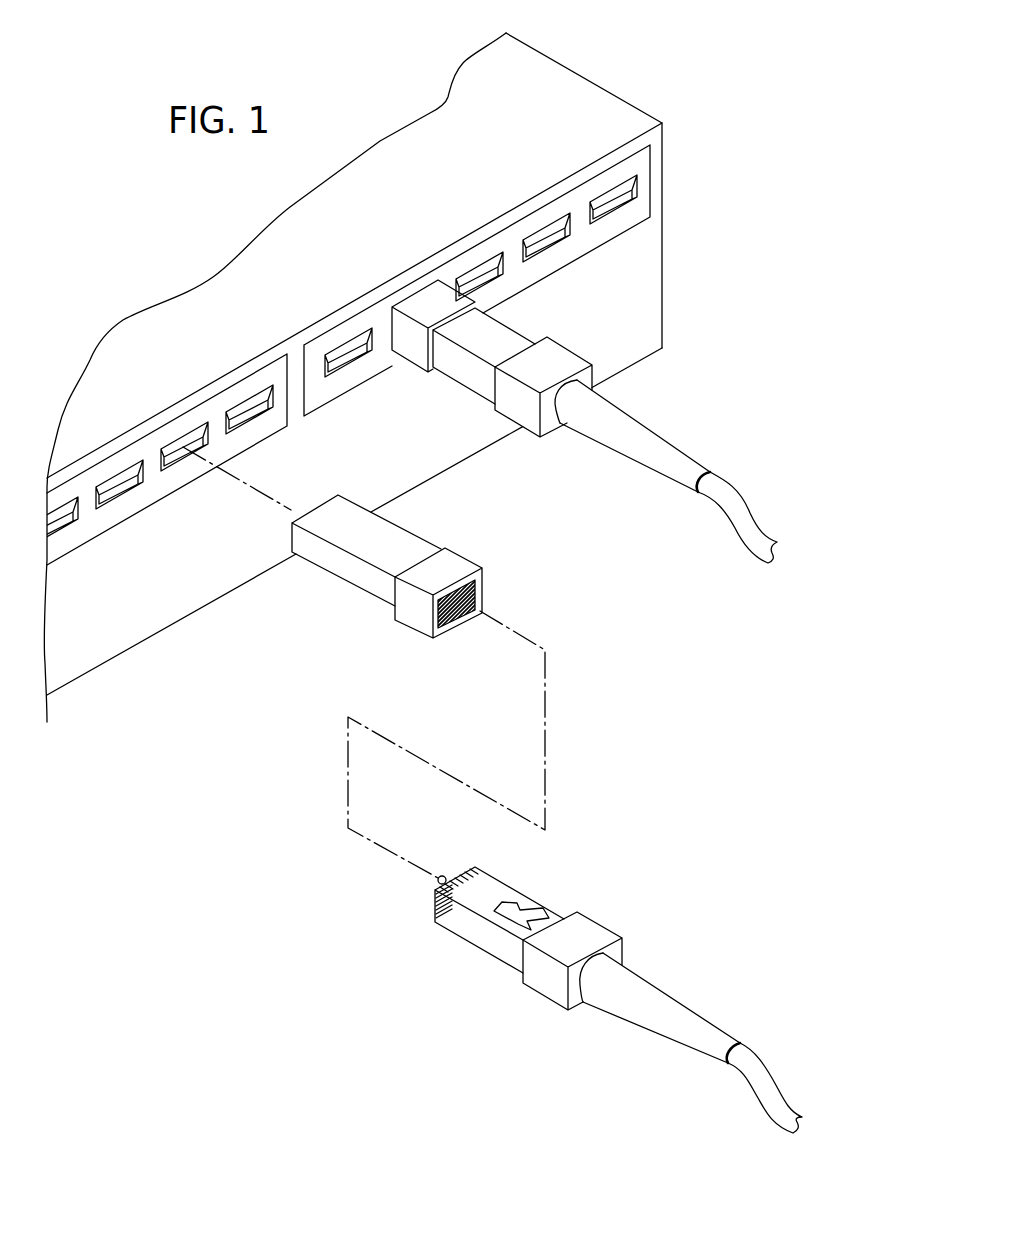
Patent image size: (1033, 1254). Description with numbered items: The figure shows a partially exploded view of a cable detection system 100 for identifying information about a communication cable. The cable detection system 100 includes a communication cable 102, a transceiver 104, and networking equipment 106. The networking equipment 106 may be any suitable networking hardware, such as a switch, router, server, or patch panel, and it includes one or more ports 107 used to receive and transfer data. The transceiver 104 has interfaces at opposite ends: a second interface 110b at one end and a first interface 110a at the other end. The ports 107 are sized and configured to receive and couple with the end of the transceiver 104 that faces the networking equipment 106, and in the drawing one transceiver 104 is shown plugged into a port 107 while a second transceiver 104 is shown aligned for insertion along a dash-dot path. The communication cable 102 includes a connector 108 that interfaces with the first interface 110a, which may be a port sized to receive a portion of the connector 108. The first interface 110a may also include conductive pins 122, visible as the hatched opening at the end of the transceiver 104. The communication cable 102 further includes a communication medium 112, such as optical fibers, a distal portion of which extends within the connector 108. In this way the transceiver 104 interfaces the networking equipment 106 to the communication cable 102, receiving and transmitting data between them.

The cable detection system 100 is at (637, 704).
The communication cable 102 is at (630, 703).
The transceiver 104 is at (385, 442).
The networking equipment 106 is at (650, 277).
The port 107 is at (637, 188).
The connector 108 is at (541, 879).
The first interface 110a is at (482, 577).
The second interface 110b is at (290, 528).
The communication medium 112 is at (765, 1067).
The conductive pins 122 is at (480, 608).